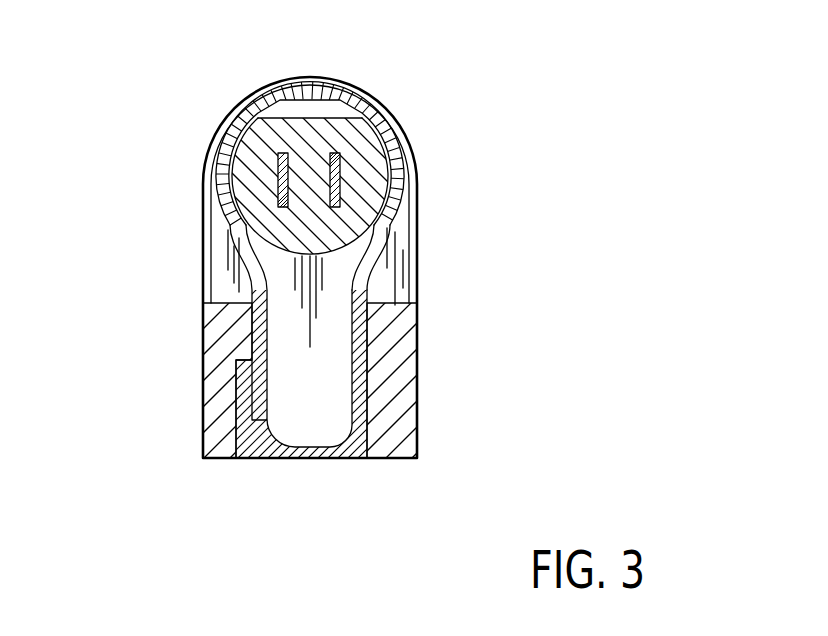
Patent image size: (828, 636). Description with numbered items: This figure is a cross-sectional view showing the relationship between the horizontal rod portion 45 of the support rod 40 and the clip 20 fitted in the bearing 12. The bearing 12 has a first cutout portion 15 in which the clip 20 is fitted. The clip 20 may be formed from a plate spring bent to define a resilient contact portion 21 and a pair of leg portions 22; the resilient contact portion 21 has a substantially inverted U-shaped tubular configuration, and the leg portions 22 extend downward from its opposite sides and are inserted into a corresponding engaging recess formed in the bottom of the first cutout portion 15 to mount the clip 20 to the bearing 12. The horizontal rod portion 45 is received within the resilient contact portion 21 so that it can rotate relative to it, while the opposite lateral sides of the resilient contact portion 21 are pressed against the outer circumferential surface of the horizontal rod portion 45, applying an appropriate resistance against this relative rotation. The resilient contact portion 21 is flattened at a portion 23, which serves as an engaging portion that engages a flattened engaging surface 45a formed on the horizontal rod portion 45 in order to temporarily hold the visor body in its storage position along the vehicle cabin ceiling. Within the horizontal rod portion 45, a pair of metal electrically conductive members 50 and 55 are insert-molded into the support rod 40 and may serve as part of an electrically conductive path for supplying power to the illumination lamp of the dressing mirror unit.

The bearing 12 is at (435, 142).
The first cutout portion 15 is at (398, 268).
The clip 20 is at (190, 199).
The resilient contact portion 21 is at (393, 200).
The leg portions 22 is at (358, 369).
The flattened portion 23 is at (252, 118).
The support rod 40 is at (413, 235).
The horizontal rod portion 45 is at (354, 119).
The flattened engaging surface 45a is at (304, 116).
The electrically conductive member 50 is at (307, 221).
The electrically conductive member 55 is at (280, 185).